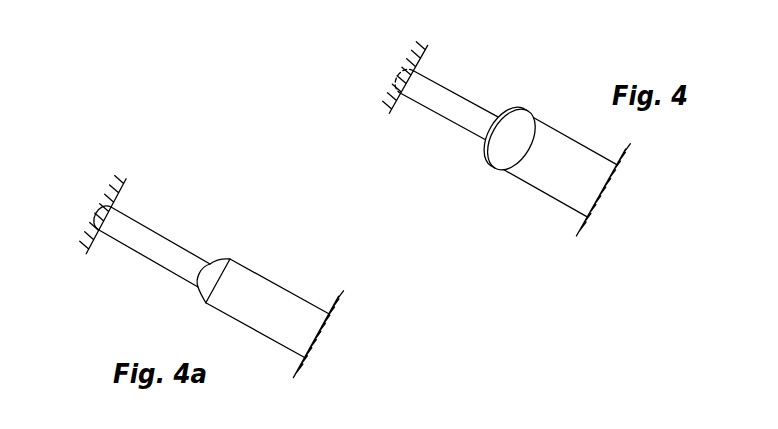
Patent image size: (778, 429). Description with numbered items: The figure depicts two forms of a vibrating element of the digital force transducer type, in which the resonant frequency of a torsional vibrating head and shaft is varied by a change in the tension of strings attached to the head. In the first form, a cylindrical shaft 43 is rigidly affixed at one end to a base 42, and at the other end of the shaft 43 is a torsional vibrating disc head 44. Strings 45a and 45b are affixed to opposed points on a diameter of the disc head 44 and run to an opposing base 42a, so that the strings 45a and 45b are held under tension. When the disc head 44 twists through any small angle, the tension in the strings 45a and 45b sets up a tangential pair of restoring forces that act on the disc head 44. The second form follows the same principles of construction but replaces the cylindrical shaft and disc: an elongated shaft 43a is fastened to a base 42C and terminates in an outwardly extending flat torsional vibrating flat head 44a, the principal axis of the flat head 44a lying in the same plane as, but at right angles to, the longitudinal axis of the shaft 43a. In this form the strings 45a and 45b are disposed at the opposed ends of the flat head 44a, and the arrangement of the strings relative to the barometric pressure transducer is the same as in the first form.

In FIG. 4, the base 42 is at (412, 75).
In FIG. 4, the shaft 43 is at (460, 107).
In FIG. 4, the torsional vibrating disc head 44 is at (527, 123).
In FIG. 4, the string 45a is at (577, 142).
In FIG. 4A, the string 45a is at (295, 294).
In FIG. 4, the string 45b is at (556, 201).
In FIG. 4A, the string 45b is at (259, 334).
In FIG. 4, the opposing base 42a is at (613, 190).
In FIG. 4A, the opposing base 42a is at (326, 332).
In FIG. 4A, the base 42C is at (119, 202).
In FIG. 4A, the shaft 43a is at (168, 238).
In FIG. 4A, the flat torsional vibrating flat head 44a is at (232, 259).